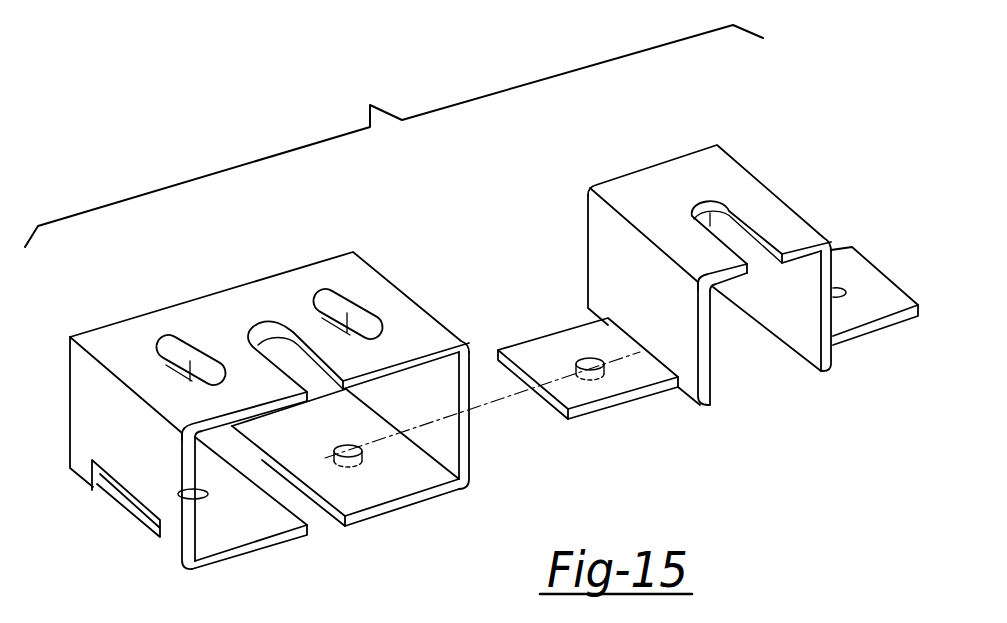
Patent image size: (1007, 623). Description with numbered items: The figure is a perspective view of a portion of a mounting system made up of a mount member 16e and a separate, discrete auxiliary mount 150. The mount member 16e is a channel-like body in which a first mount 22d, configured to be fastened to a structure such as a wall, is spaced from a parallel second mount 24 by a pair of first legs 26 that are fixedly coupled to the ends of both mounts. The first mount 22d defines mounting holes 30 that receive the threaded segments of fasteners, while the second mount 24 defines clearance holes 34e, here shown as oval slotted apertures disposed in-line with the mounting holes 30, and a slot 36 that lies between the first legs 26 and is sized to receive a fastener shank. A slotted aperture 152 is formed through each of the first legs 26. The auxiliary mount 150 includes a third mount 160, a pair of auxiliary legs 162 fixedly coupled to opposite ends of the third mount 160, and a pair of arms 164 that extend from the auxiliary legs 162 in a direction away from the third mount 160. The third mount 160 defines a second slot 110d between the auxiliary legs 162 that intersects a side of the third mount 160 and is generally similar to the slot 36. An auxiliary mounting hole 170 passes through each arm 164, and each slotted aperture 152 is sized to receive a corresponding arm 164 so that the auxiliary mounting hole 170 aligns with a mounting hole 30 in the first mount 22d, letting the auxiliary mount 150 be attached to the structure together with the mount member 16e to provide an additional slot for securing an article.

The mount member 16e is at (233, 264).
The second mount 24 is at (415, 327).
The first legs 26 is at (466, 366).
The first mount 22d is at (262, 545).
The clearance holes 34e is at (338, 313).
The slot 36 is at (293, 358).
The mounting holes 30 is at (348, 446).
The slotted aperture 152 is at (420, 442).
The auxiliary mount 150 is at (676, 151).
The third mount 160 is at (735, 182).
The second slot 110d is at (752, 244).
The auxiliary legs 162 is at (827, 320).
The arms 164 is at (633, 368).
The auxiliary mounting hole 170 is at (588, 360).